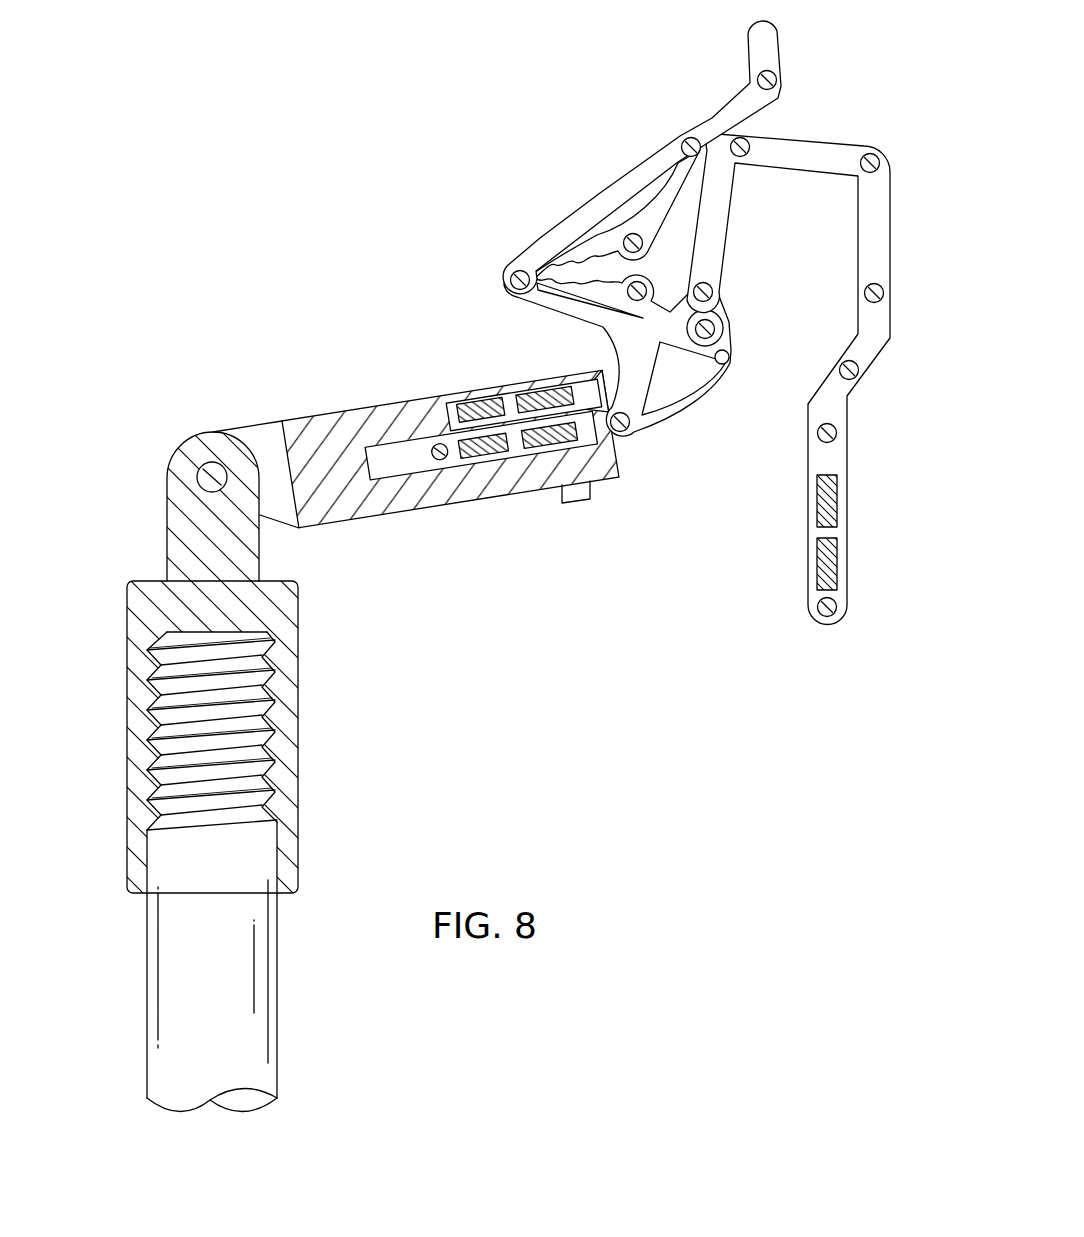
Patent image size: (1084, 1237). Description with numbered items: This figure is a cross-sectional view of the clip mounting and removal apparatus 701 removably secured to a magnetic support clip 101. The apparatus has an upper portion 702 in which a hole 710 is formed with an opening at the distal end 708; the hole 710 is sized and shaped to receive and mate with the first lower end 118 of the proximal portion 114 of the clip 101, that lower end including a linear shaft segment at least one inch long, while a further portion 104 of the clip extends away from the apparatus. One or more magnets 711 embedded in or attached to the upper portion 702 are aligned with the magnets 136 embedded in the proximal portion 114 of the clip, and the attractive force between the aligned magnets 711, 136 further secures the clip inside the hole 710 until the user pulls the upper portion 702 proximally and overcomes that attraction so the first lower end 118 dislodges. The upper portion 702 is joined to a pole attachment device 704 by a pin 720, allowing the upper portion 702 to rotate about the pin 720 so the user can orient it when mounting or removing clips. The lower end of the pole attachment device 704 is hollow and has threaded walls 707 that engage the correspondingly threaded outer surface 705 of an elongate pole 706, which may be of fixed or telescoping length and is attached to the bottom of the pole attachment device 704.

The magnetic support clip 101 is at (852, 97).
The frame arm 104 is at (891, 258).
The proximal portion 114 is at (613, 187).
The first lower end 118 is at (398, 448).
The magnets 136 is at (482, 465).
The clamp base assembly 701 is at (382, 653).
The upper portion 702 is at (390, 518).
The pole attachment device 704 is at (127, 840).
The threaded outer surface 705 is at (163, 762).
The pole 706 is at (147, 1007).
The threaded walls 707 is at (282, 747).
The distal end 708 is at (608, 483).
The hole 710 is at (612, 446).
The magnets 711 is at (475, 390).
The pin 720 is at (195, 466).